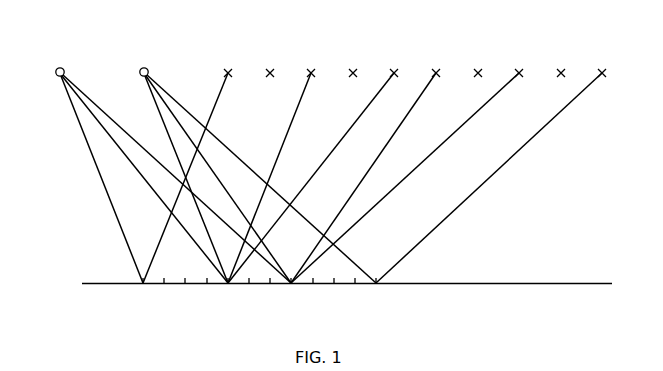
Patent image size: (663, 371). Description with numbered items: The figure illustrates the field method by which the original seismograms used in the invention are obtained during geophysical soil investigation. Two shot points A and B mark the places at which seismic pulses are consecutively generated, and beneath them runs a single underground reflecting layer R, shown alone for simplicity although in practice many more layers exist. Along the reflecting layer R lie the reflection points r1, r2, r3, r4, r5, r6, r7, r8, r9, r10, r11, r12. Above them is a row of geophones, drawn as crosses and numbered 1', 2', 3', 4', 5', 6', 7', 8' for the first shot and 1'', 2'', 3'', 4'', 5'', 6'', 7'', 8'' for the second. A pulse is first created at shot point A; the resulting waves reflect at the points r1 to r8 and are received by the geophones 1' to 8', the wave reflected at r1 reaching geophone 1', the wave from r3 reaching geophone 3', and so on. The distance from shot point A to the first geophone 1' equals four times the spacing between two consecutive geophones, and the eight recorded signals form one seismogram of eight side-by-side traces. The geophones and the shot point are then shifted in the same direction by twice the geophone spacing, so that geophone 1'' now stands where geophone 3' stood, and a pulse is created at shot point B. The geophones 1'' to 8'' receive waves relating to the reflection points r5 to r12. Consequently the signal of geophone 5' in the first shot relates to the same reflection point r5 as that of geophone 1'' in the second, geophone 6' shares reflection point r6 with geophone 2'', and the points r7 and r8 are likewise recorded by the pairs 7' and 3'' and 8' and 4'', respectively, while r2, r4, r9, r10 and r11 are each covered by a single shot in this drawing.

The shot point A is at (172, 162).
The shot point B is at (257, 162).
The underground reflecting layer R is at (512, 284).
The geophone 1' is at (189, 163).
The geophone 2' is at (271, 60).
The geophone 3' is at (273, 163).
The geophone 4' is at (354, 60).
The geophone 5' is at (315, 163).
The geophone 6' is at (367, 163).
The geophone 7' is at (479, 60).
The geophone 8' is at (408, 163).
The geophone 1'' is at (312, 32).
The geophone 2'' is at (354, 32).
The geophone 3'' is at (395, 32).
The geophone 4'' is at (437, 32).
The geophone 5'' is at (479, 32).
The geophone 6'' is at (520, 32).
The geophone 7'' is at (562, 50).
The geophone 8'' is at (493, 153).
The reflection point r1 is at (142, 296).
The reflection point r2 is at (163, 296).
The reflection point r3 is at (184, 296).
The reflection point r4 is at (206, 296).
The reflection point r5 is at (227, 296).
The reflection point r6 is at (248, 296).
The reflection point r7 is at (269, 296).
The reflection point r8 is at (290, 296).
The reflection point r9 is at (312, 296).
The reflection point r10 is at (334, 296).
The reflection point r11 is at (356, 296).
The reflection point r12 is at (376, 296).